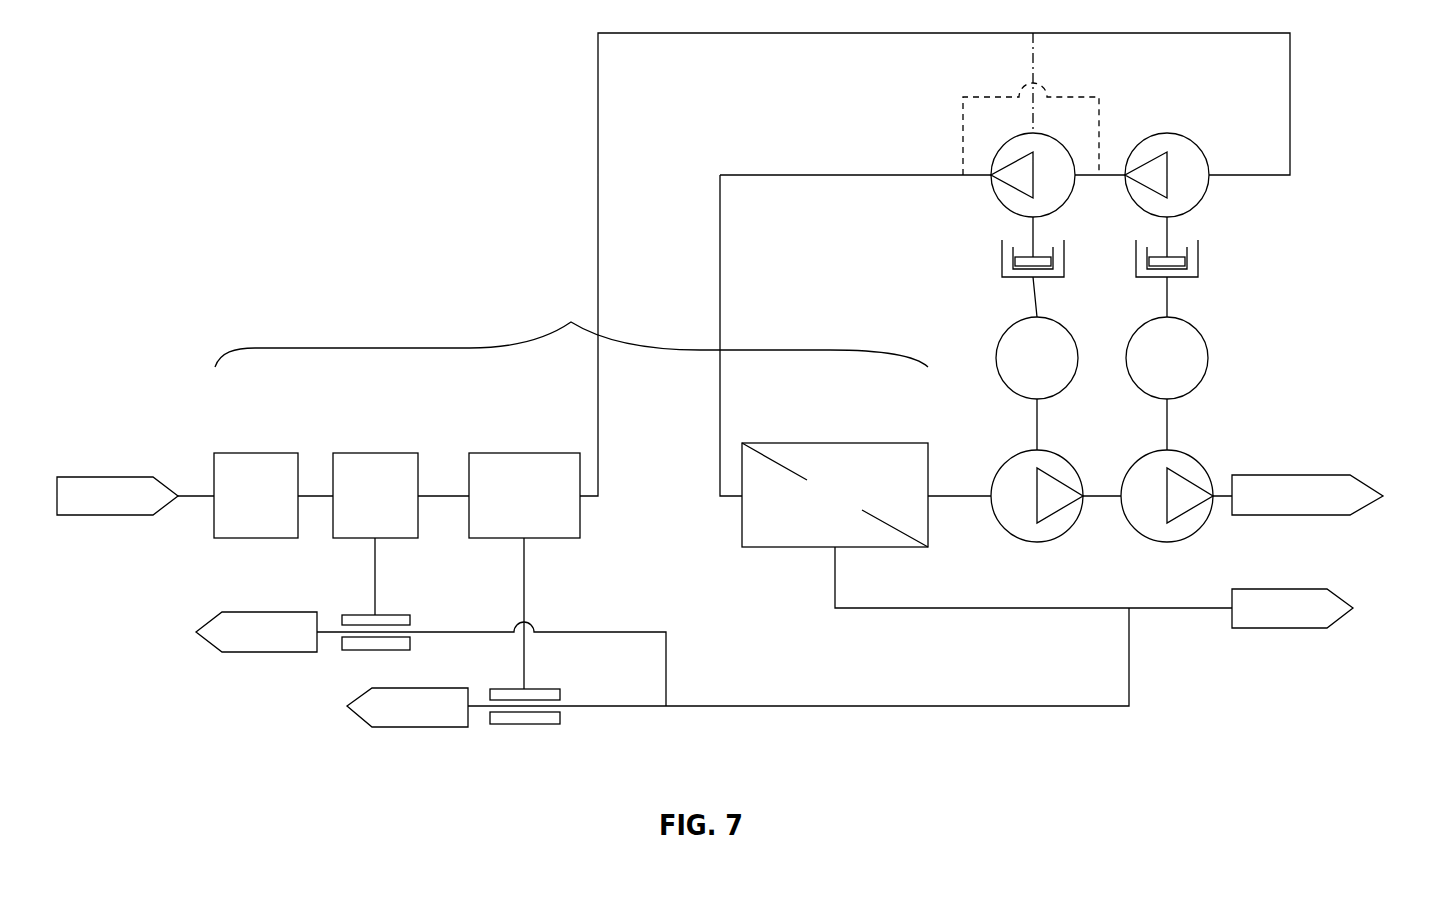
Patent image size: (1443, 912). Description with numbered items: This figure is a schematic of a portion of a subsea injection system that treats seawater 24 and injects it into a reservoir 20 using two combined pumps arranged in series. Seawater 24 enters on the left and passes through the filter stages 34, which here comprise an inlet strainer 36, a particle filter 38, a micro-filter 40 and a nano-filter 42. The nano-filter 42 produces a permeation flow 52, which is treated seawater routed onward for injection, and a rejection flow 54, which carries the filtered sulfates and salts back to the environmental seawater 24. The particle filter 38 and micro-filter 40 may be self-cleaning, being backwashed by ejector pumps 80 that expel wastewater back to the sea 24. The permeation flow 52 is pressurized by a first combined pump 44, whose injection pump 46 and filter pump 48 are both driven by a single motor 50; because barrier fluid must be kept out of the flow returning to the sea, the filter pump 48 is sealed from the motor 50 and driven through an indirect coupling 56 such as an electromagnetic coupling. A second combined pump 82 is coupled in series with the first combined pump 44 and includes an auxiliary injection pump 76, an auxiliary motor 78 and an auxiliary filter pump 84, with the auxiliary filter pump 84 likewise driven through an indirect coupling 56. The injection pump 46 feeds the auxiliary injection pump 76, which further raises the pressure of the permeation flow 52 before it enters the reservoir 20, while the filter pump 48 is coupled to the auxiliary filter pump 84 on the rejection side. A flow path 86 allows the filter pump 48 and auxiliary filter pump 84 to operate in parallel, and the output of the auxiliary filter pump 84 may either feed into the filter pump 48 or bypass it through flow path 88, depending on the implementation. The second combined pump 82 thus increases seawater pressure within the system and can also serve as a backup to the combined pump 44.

The reservoir 20 is at (1365, 487).
The seawater 24 is at (108, 477).
The filter stages 34 is at (571, 329).
The inlet strainer 36 is at (256, 453).
The particle filter 38 is at (374, 453).
The micro-filter 40 is at (526, 453).
The nano-filter 42 is at (840, 443).
The combined pump 44 is at (1017, 166).
The injection pump 46 is at (1060, 452).
The filter pump 48 is at (1062, 206).
The motor 50 is at (1066, 328).
The permeation flow 52 is at (958, 494).
The rejection flow 54 is at (1015, 610).
The indirect coupling 56 is at (998, 265).
The auxiliary injection pump 76 is at (1190, 452).
The auxiliary motor 78 is at (1194, 328).
The ejector pumps 80 is at (396, 613).
The second combined pump 82 is at (1190, 146).
The auxiliary filter pump 84 is at (1194, 141).
The flow path 86 is at (1031, 60).
The flow path 88 is at (1072, 97).